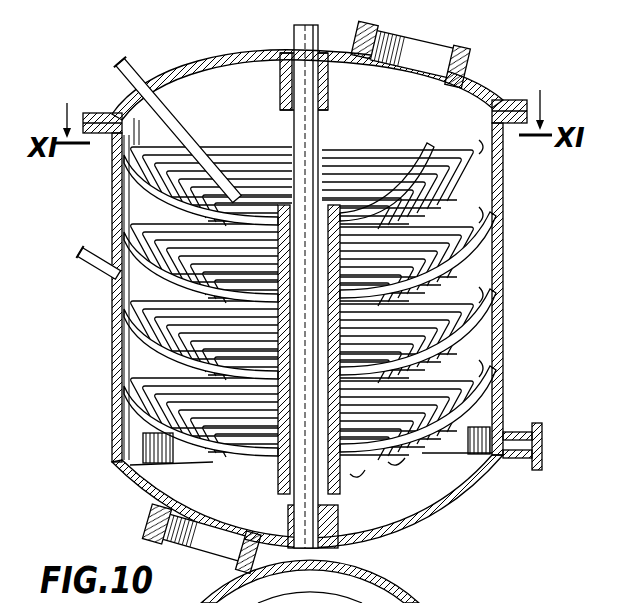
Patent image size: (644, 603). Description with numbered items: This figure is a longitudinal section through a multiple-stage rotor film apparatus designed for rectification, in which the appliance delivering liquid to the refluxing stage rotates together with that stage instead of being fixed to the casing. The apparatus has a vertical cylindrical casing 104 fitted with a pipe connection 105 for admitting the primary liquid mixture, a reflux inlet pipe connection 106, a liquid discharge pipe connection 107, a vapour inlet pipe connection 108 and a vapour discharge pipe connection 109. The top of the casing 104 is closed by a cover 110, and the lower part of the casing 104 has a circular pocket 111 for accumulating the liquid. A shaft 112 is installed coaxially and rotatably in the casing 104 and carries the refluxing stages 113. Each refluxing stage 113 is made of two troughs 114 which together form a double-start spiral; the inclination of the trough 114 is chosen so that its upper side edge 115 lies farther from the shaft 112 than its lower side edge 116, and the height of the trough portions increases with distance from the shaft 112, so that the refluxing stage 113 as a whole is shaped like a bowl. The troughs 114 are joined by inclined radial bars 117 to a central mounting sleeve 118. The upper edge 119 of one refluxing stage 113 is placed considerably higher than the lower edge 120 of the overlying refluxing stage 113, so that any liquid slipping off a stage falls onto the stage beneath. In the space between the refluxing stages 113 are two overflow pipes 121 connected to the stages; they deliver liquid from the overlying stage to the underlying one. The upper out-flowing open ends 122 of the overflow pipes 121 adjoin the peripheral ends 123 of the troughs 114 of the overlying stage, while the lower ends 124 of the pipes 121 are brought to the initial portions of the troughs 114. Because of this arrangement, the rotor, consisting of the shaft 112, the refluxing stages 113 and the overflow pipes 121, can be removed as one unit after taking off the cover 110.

The vertical cylindrical casing 104 is at (504, 326).
The pipe connection for admitting the primary liquid mixture 105 is at (84, 248).
The reflux inlet pipe connection 106 is at (137, 71).
The liquid discharge pipe connection 107 is at (544, 454).
The vapour inlet pipe connection 108 is at (147, 524).
The vapour discharge pipe connection 109 is at (476, 57).
The cover 110 is at (201, 61).
The circular pocket 111 is at (484, 427).
The shaft 112 is at (330, 495).
The refluxing stage 113 is at (213, 466).
The trough 114 is at (447, 461).
The upper side edge of the trough 115 is at (490, 465).
The lower side edge of the trough 116 is at (400, 468).
The inclined radial bar 117 is at (425, 143).
The central mounting sleeve 118 is at (290, 500).
The upper edge of a refluxing stage 119 is at (137, 373).
The lower edge of a refluxing stage 120 is at (289, 401).
The overflow pipe 121 is at (137, 325).
The upper out-flowing open end of the overflow pipe 122 is at (484, 244).
The peripheral end of the trough 123 is at (484, 217).
The lower end of the overflow pipe 124 is at (362, 478).